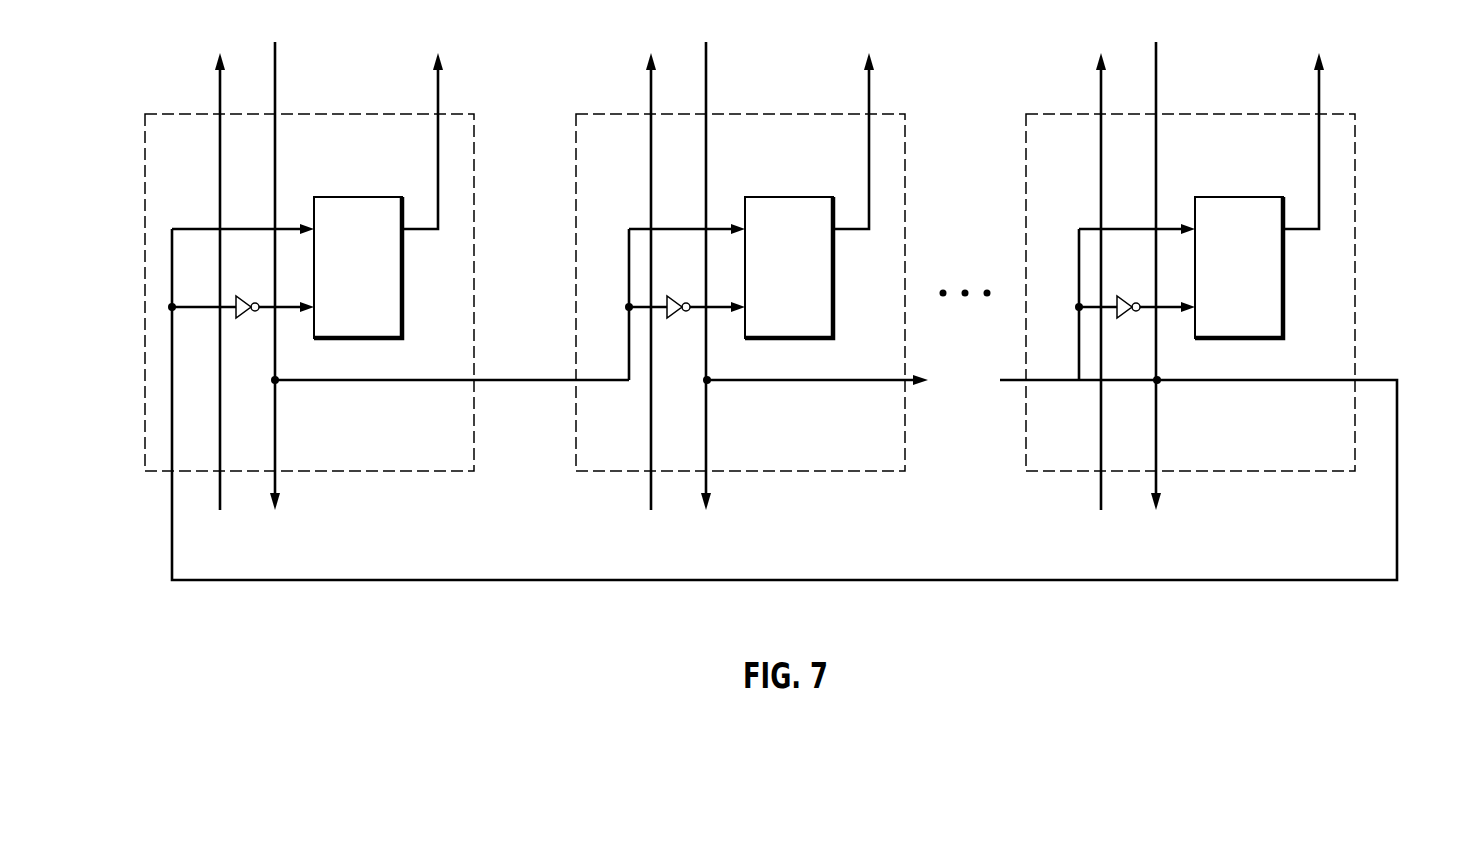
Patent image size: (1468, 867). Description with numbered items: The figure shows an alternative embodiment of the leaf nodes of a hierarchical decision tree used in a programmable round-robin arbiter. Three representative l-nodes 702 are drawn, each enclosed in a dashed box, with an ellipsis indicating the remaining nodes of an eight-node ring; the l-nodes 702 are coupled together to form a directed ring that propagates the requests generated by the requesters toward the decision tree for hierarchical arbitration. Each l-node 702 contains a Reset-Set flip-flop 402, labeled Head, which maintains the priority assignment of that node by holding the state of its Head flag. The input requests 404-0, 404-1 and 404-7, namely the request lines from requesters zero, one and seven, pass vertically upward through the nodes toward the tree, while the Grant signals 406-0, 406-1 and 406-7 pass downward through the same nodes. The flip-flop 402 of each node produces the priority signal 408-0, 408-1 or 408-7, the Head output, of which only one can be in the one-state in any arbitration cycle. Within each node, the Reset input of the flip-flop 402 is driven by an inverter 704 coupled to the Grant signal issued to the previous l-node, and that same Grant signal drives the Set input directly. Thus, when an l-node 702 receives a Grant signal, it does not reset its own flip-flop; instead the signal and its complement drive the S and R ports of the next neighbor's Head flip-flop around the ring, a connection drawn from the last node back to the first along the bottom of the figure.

The Reset-Set flip-flop 402 is at (360, 340).
The input request 404-0 is at (220, 500).
The input request 404-1 is at (687, 305).
The input request 404-7 is at (1137, 305).
The Grant signal 406-0 is at (277, 487).
The Grant signal 406-1 is at (750, 285).
The Grant signal 406-7 is at (1200, 285).
The priority signal 408-0 is at (438, 103).
The priority signal 408-1 is at (907, 139).
The priority signal 408-7 is at (1357, 139).
The l-node 702 is at (422, 472).
The inverter 704 is at (243, 314).